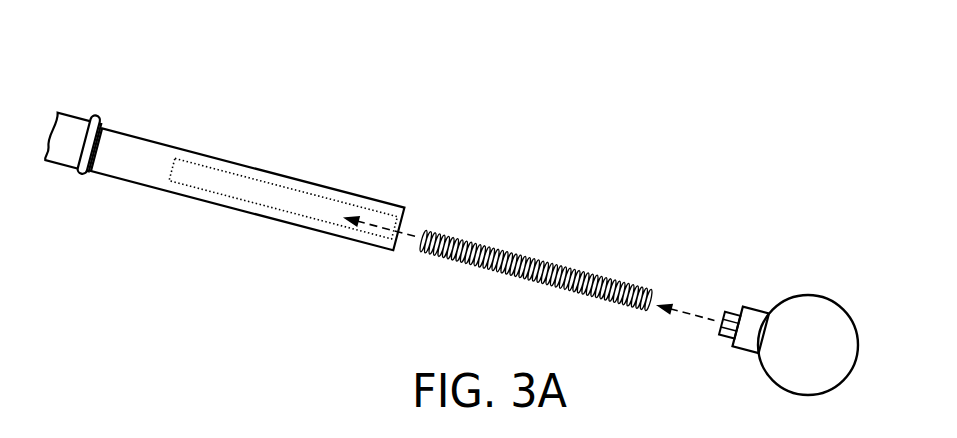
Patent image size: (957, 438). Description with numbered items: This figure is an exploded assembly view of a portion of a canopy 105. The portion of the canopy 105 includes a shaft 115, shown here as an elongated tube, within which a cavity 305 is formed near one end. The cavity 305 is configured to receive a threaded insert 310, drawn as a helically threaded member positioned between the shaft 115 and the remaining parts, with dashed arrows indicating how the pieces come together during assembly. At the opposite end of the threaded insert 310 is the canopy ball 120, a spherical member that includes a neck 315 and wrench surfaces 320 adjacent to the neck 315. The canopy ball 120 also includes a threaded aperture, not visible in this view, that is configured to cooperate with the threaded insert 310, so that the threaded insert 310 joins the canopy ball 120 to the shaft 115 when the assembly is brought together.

The canopy 105 is at (423, 100).
The shaft 115 is at (173, 147).
The canopy ball 120 is at (829, 283).
The cavity 305 is at (300, 198).
The threaded insert 310 is at (563, 270).
The neck 315 is at (753, 322).
The wrench surfaces 320 is at (727, 338).